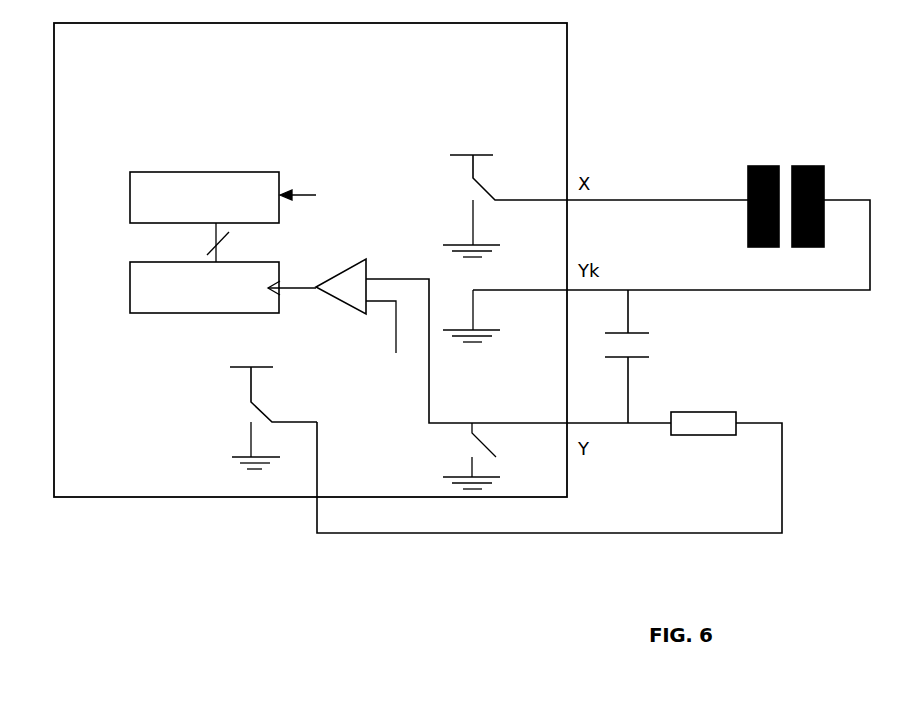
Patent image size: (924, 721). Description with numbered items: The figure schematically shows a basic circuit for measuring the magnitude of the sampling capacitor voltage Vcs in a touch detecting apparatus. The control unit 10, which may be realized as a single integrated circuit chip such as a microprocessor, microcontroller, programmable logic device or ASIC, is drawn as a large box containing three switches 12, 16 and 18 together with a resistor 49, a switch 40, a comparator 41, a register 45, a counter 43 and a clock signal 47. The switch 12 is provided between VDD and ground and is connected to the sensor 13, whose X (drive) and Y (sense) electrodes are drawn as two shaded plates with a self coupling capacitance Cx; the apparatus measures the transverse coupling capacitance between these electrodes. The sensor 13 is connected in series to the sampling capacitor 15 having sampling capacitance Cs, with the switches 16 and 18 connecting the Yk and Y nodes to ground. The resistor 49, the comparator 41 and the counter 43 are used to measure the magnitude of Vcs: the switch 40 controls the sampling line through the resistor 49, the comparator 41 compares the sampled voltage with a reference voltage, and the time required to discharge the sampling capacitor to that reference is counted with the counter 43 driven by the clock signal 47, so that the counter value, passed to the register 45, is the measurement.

The control unit 10 is at (310, 260).
The switch 12 is at (595, 201).
The sensor 13 is at (825, 178).
The sampling capacitor 15 is at (645, 350).
The switch 16 is at (499, 316).
The switch 18 is at (498, 456).
The switch 40 is at (243, 413).
The comparator 41 is at (366, 258).
The counter 43 is at (130, 188).
The register 45 is at (130, 278).
The clock signal 47 is at (345, 173).
The resistor 49 is at (748, 412).